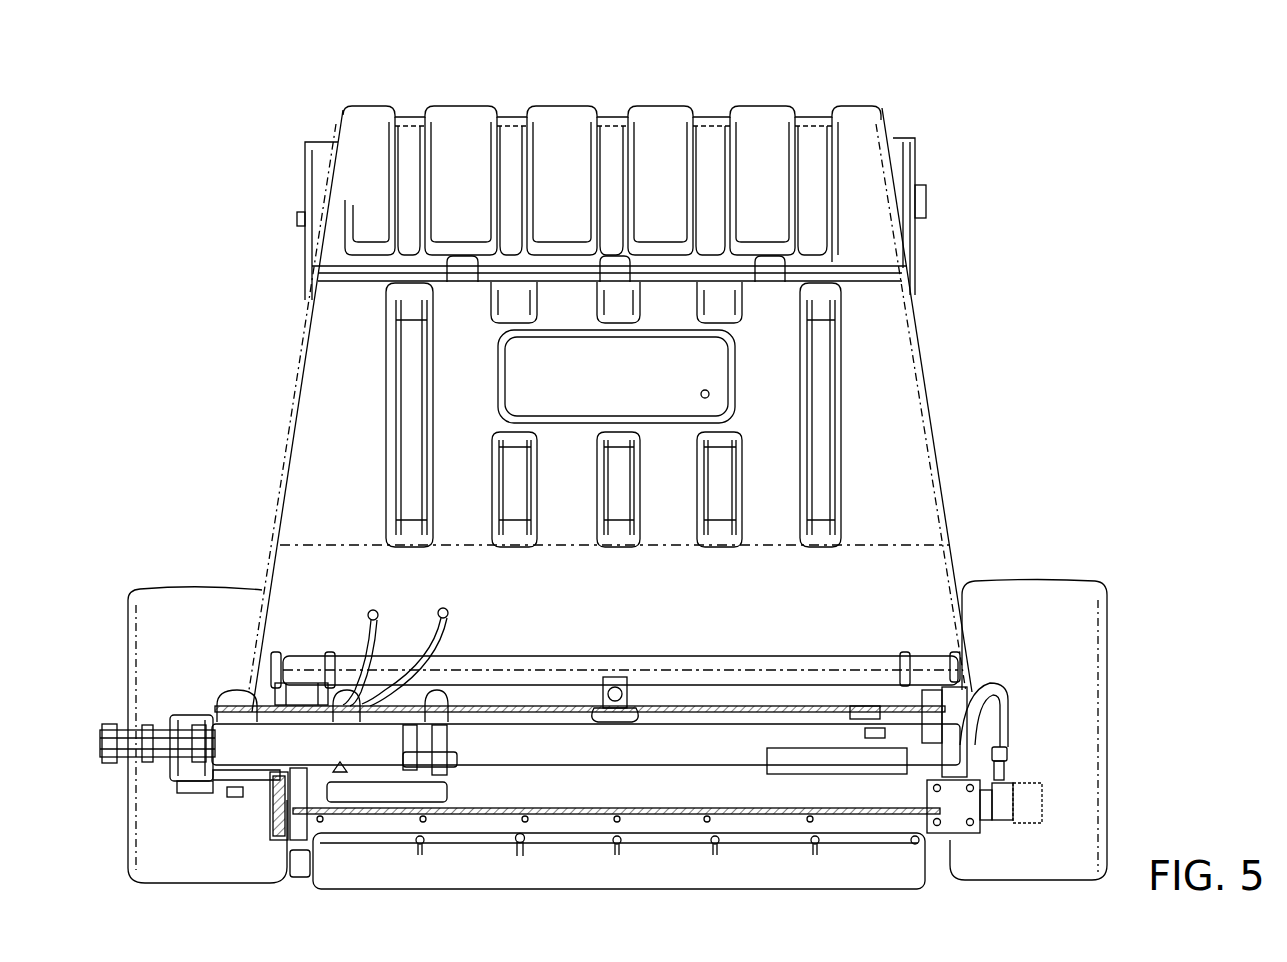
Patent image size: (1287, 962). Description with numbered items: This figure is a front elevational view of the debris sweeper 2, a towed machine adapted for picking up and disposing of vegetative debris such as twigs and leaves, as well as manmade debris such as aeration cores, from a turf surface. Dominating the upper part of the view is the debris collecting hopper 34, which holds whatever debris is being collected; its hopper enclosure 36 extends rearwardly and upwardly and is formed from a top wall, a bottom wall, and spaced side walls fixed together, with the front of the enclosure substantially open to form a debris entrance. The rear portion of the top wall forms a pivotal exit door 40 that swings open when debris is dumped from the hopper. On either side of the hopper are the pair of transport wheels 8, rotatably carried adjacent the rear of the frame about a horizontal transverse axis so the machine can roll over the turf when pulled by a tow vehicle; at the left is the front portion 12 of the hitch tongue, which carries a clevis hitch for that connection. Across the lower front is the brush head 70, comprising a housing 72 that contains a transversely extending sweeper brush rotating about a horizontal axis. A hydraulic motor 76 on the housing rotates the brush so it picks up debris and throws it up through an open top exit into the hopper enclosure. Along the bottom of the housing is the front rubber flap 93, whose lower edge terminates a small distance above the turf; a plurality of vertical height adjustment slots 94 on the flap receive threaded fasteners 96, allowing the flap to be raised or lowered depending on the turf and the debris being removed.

The sweeper 2 is at (1005, 270).
The transport wheels 8 is at (198, 586).
The front portion 12 is at (280, 803).
The debris collecting hopper 34 is at (836, 84).
The hopper enclosure 36 is at (285, 363).
The pivotal exit door 40 is at (565, 130).
The brush head 70 is at (707, 748).
The housing 72 is at (520, 787).
The hydraulic motor 76 is at (1030, 808).
The front rubber flap 93 is at (728, 878).
The vertical height adjustment slots 94 is at (515, 840).
The threaded fasteners 96 is at (525, 840).